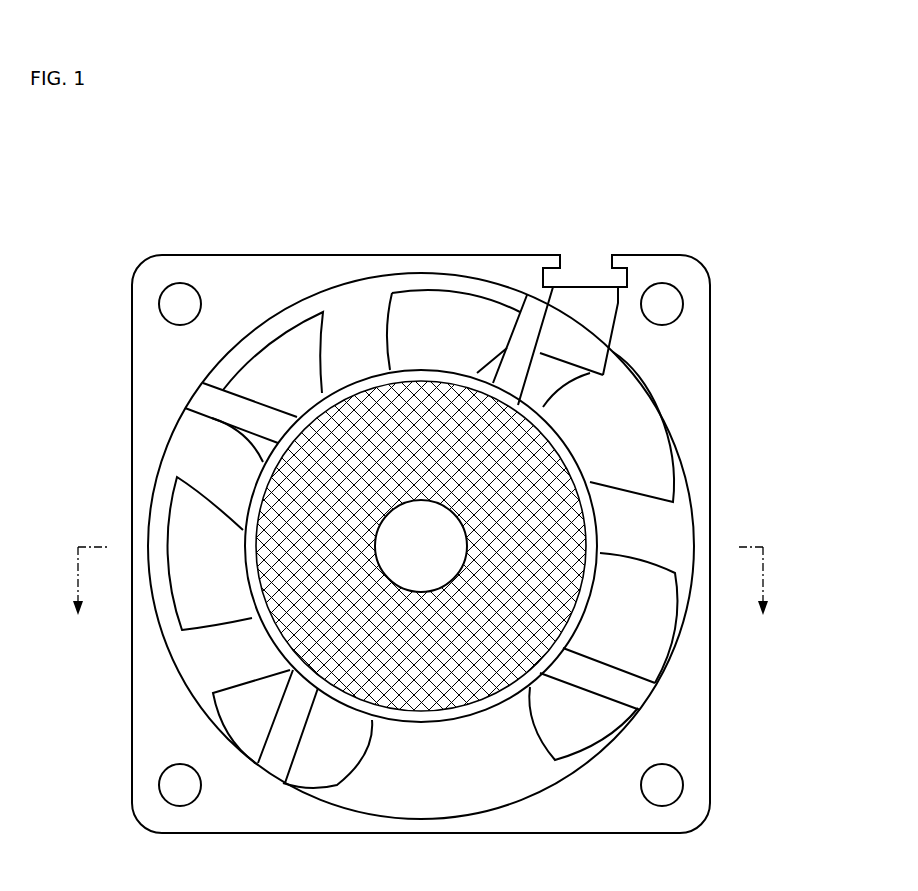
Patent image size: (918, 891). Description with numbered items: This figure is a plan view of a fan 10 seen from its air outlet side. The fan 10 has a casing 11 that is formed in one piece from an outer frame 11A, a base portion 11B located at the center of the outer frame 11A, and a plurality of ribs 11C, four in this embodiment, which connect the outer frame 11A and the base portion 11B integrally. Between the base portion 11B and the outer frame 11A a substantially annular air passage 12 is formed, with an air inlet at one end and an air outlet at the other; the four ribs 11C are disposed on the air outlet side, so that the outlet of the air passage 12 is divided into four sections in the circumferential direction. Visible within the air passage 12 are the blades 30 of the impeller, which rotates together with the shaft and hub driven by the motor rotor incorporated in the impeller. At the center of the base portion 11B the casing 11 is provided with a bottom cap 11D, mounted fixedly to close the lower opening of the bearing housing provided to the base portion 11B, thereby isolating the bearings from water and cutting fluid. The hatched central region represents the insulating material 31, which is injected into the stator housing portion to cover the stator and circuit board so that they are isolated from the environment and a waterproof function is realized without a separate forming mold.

The fan 10 is at (657, 204).
The casing 11 is at (724, 299).
The outer frame 11A is at (692, 353).
The base portion 11B is at (573, 462).
The ribs 11C is at (613, 675).
The bottom cap 11D is at (440, 560).
The air passage 12 is at (181, 450).
The blades 30 is at (197, 518).
The insulating material 31 is at (305, 618).